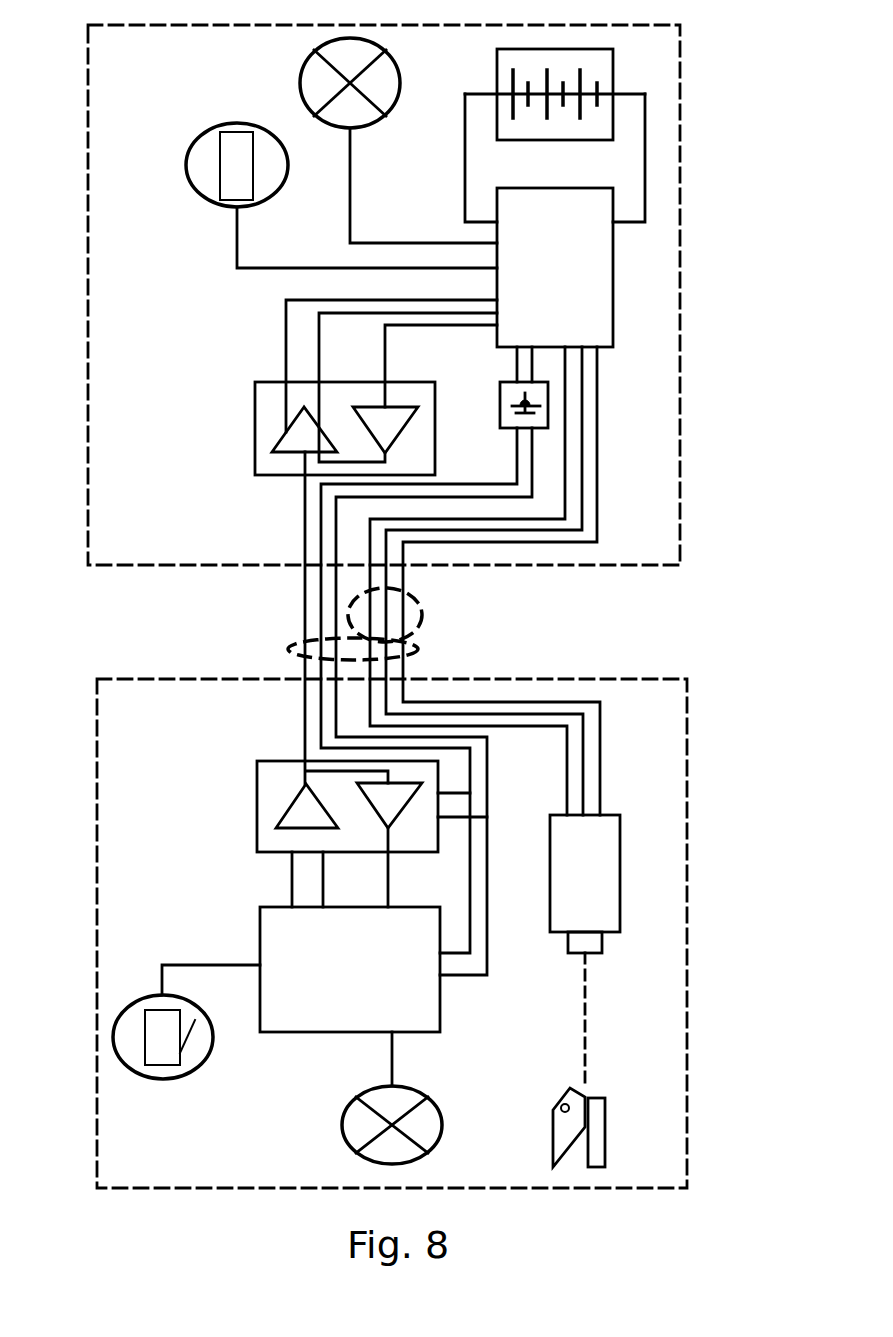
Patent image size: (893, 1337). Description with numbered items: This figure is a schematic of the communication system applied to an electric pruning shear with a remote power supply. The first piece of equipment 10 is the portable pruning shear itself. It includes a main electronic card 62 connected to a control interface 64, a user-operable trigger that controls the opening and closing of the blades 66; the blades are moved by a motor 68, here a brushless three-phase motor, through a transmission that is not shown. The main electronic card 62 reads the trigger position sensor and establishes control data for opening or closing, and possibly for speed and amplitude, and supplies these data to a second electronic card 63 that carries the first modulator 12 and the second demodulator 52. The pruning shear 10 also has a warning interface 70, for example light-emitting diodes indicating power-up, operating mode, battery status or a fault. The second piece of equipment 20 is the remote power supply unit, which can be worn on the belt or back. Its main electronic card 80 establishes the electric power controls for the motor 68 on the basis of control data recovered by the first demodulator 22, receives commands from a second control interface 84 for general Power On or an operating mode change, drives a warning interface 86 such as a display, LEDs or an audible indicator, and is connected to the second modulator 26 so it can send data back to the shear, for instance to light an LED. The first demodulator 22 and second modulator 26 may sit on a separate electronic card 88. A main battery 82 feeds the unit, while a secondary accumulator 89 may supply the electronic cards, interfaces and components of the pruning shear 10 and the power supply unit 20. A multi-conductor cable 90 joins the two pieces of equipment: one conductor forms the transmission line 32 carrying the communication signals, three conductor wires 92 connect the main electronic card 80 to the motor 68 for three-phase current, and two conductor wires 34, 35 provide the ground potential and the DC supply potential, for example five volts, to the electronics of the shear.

The first piece of equipment 10 is at (687, 940).
The first modulator 12 is at (288, 807).
The second piece of equipment 20 is at (680, 309).
The first demodulator 22 is at (285, 430).
The second modulator 26 is at (405, 428).
The transmission line 32 is at (303, 610).
The conductor wire 34 is at (519, 477).
The conductor wire 35 is at (534, 450).
The second demodulator 52 is at (400, 817).
The main electronic card 62 is at (260, 928).
The second electronic card 63 is at (258, 830).
The control interface 64 is at (137, 1000).
The blades 66 is at (552, 1140).
The motor 68 is at (620, 873).
The warning interface 70 is at (337, 1123).
The main electronic card 80 is at (615, 288).
The main battery 82 is at (497, 63).
The second control interface 84 is at (190, 146).
The warning interface 86 is at (300, 75).
The electronic card 88 is at (255, 462).
The secondary accumulator 89 is at (548, 403).
The cable 90 is at (420, 650).
The conductor wires 92 is at (422, 607).